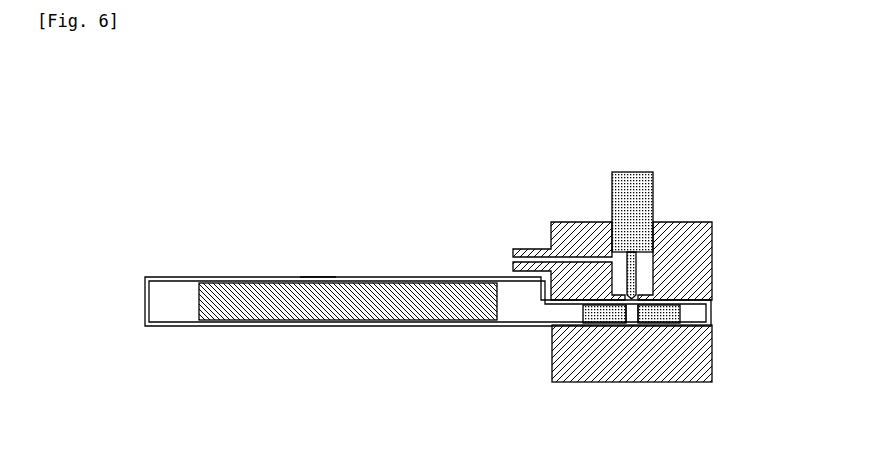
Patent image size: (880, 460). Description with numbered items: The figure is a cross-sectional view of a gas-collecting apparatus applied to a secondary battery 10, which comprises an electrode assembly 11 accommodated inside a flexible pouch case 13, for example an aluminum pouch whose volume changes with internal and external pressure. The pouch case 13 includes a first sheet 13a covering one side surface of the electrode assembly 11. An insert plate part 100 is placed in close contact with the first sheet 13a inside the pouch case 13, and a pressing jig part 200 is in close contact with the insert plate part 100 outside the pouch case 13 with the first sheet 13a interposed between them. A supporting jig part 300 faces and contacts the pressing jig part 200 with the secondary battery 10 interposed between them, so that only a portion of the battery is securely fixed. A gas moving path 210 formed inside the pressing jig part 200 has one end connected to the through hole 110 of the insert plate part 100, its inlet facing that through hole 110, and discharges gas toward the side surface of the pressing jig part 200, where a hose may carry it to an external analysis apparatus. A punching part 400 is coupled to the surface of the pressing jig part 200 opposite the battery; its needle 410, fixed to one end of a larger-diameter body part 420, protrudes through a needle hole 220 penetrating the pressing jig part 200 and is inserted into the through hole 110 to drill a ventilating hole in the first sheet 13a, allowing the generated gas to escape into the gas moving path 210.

The secondary battery 10 is at (145, 305).
The electrode assembly 11 is at (242, 282).
The pouch case 13 is at (288, 158).
The first sheet 13a is at (303, 282).
The insert plate part 100 is at (707, 311).
The through hole 110 is at (630, 318).
The pressing jig part 200 is at (657, 245).
The gas moving path 210 is at (560, 222).
The needle hole 220 is at (645, 273).
The supporting jig part 300 is at (712, 364).
The punching part 400 is at (629, 228).
The needle 410 is at (628, 300).
The body part 420 is at (653, 185).